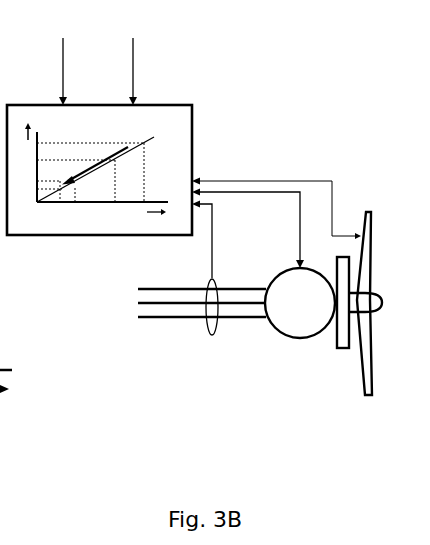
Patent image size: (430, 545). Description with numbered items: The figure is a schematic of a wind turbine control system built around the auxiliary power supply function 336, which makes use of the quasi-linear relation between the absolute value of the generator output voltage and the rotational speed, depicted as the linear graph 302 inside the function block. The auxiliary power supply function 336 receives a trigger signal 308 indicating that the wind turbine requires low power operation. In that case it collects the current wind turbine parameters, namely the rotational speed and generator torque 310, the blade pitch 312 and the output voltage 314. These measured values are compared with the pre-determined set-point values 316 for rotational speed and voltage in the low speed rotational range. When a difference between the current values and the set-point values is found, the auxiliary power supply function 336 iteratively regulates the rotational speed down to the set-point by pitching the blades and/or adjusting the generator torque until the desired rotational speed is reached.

The linear graph 302 is at (300, 303).
The trigger signal 308 is at (40, 59).
The rotational speed and generator torque 310 is at (222, 190).
The blade pitch 312 is at (287, 178).
The output voltage 314 is at (202, 284).
The set-point values 316 is at (161, 57).
The auxiliary power supply function 336 is at (99, 170).